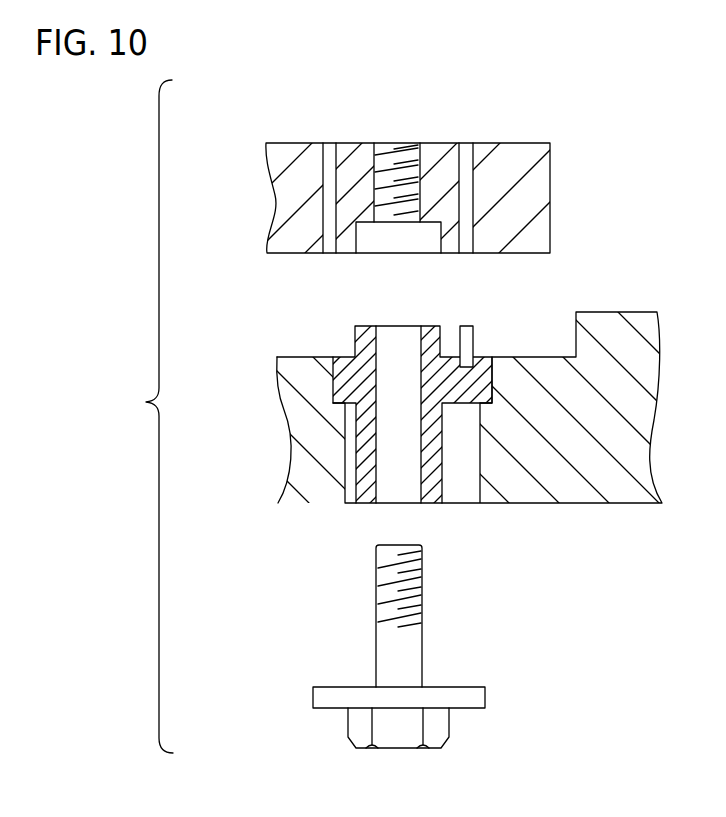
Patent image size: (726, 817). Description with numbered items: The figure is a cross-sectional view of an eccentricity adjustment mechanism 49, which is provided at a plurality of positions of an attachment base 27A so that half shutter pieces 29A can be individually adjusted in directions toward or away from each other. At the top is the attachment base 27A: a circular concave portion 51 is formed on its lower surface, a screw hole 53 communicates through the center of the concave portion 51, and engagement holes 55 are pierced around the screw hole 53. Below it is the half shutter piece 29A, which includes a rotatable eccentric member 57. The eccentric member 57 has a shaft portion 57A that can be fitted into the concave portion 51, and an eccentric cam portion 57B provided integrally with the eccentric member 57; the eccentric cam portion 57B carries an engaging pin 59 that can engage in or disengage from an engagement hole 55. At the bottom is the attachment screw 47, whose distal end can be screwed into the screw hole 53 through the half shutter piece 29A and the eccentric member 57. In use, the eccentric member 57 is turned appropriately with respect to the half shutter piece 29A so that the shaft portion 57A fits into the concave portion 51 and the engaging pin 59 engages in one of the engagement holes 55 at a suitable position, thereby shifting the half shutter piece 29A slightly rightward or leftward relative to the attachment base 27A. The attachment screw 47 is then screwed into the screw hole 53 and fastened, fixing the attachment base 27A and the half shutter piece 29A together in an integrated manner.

The attachment base 27A is at (535, 153).
The half shutter piece 29A is at (612, 320).
The attachment screw 47 is at (416, 653).
The eccentricity adjustment mechanism 49 is at (288, 298).
The concave portion 51 is at (367, 243).
The screw hole 53 is at (410, 150).
The engagement hole 55 is at (467, 150).
The eccentric member 57 is at (410, 414).
The shaft portion 57A is at (365, 335).
The eccentric cam portion 57B is at (452, 372).
The engaging pin 59 is at (468, 335).